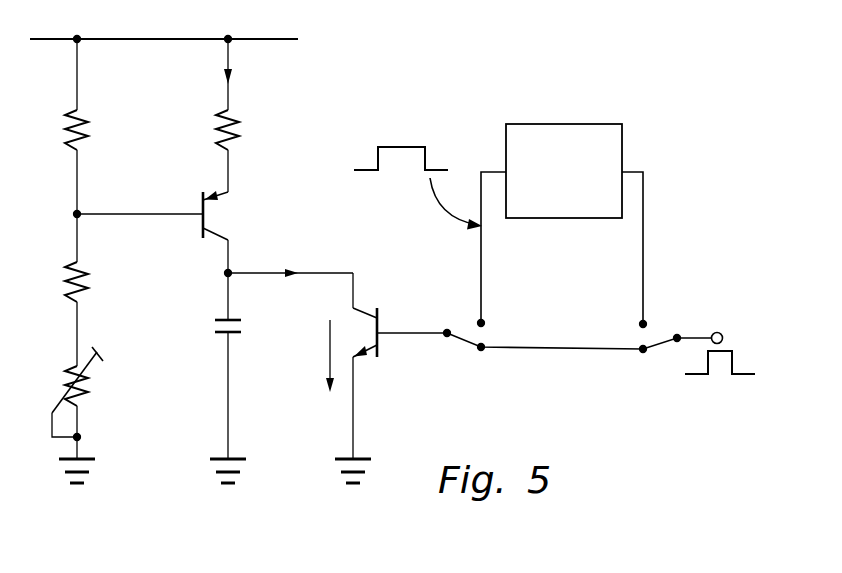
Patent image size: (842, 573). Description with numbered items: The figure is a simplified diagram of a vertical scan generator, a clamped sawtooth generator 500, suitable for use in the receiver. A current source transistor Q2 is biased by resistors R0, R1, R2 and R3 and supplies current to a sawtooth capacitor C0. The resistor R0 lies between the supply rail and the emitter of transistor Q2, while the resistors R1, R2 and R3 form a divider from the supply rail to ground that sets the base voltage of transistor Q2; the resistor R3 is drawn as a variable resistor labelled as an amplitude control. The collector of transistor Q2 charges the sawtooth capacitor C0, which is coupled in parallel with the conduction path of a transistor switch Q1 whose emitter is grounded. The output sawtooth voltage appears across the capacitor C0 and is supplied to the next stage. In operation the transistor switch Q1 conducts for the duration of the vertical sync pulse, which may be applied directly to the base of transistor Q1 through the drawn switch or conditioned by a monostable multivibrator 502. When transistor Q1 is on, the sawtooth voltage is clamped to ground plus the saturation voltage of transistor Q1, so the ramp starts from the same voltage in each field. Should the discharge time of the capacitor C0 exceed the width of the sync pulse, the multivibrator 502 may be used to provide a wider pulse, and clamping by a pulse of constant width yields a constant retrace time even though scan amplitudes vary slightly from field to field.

The clamped sawtooth generator 500 is at (166, 83).
The monostable multivibrator 502 is at (526, 123).
The resistor R1 is at (91, 130).
The resistor R2 is at (91, 282).
The resistor R3 is at (83, 380).
The resistor R0 is at (242, 130).
The sawtooth capacitor C0 is at (234, 338).
The transistor switch Q1 is at (361, 332).
The current source transistor Q2 is at (229, 215).